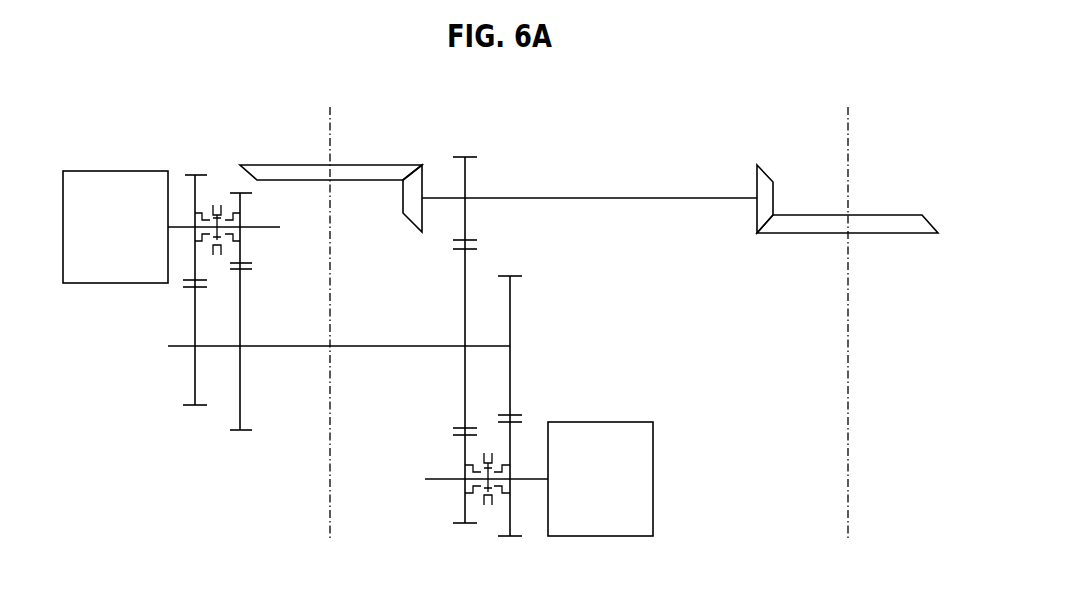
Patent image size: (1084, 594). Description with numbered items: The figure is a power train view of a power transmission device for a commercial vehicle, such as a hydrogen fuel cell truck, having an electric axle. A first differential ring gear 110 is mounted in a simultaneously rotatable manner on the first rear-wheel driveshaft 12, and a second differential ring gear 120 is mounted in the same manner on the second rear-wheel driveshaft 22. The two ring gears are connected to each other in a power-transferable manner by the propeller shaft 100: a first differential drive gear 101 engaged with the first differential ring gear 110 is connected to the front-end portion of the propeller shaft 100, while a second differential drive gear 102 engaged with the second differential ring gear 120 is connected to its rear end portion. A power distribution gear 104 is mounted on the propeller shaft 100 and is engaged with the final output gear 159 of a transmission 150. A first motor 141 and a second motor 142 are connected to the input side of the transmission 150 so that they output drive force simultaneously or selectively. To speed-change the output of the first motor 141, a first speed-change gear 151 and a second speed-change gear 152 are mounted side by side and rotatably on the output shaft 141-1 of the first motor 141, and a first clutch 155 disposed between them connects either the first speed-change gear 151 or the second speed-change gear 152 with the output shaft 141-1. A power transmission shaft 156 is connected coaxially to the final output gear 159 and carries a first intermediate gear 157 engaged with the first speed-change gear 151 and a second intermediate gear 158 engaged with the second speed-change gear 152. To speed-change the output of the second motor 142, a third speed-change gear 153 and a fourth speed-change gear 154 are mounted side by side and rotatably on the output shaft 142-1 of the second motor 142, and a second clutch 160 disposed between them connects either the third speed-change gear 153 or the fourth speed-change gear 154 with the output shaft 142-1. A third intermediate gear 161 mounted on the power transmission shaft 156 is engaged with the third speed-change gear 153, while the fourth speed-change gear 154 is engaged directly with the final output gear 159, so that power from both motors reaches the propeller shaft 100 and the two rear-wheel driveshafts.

The first rear-wheel driveshaft 12 is at (330, 130).
The second rear-wheel driveshaft 22 is at (848, 132).
The propeller shaft 100 is at (586, 190).
The first differential drive gear 101 is at (423, 165).
The second differential drive gear 102 is at (757, 178).
The power distribution gear 104 is at (470, 157).
The first differential ring gear 110 is at (345, 165).
The second differential ring gear 120 is at (800, 234).
The first motor 141 is at (110, 171).
The output shaft of the first motor 141-1 is at (183, 226).
The second motor 142 is at (630, 422).
The output shaft of the second motor 142-1 is at (535, 482).
The transmission 150 is at (203, 436).
The first speed-change gear 151 is at (183, 282).
The second speed-change gear 152 is at (250, 265).
The third speed-change gear 153 is at (522, 421).
The fourth speed-change gear 154 is at (453, 433).
The first clutch 155 is at (216, 204).
The power transmission shaft 156 is at (358, 347).
The first intermediate gear 157 is at (190, 290).
The second intermediate gear 158 is at (252, 270).
The final output gear 159 is at (478, 247).
The second clutch 160 is at (488, 506).
The third intermediate gear 161 is at (512, 414).